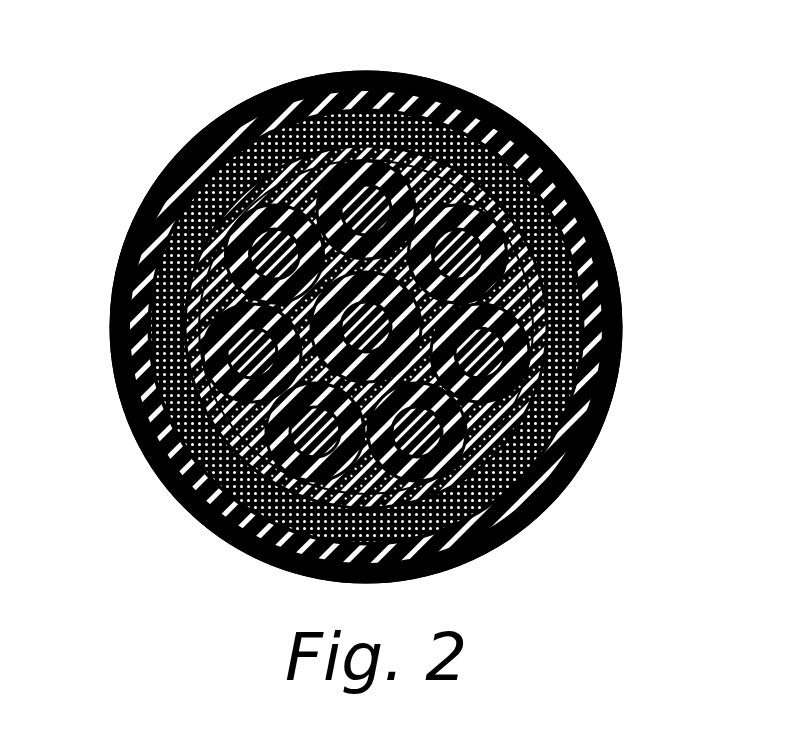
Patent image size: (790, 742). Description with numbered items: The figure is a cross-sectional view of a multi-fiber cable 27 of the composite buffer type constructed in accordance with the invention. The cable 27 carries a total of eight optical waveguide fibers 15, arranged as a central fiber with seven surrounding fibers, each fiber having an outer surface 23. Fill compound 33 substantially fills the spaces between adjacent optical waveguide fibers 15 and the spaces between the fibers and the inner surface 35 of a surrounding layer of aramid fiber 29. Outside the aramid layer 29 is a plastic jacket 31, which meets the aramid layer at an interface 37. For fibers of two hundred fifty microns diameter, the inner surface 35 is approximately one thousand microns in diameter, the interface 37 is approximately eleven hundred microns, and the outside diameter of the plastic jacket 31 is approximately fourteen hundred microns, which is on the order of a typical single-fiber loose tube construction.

The optical waveguide fibers 15 is at (410, 155).
The outer surface 23 is at (213, 126).
The multi-fiber cable 27 is at (364, 303).
The layer of aramid fiber 29 is at (617, 371).
The plastic jacket 31 is at (575, 447).
The fill compound 33 is at (471, 135).
The inner surface of the layer of aramid fiber 35 is at (600, 311).
The interface between aramid layer and plastic jacket 37 is at (574, 266).